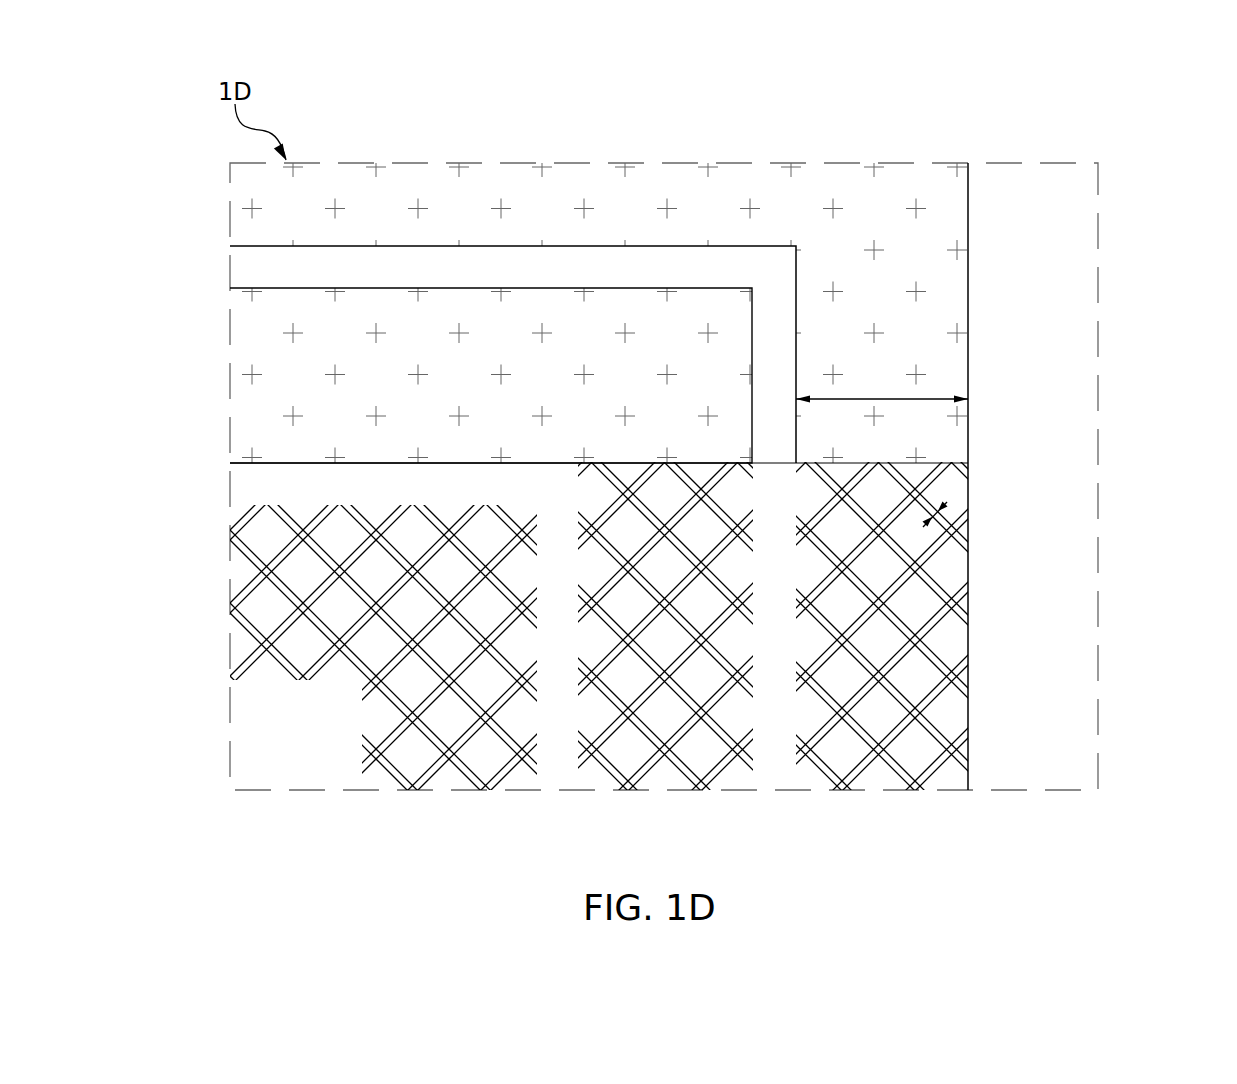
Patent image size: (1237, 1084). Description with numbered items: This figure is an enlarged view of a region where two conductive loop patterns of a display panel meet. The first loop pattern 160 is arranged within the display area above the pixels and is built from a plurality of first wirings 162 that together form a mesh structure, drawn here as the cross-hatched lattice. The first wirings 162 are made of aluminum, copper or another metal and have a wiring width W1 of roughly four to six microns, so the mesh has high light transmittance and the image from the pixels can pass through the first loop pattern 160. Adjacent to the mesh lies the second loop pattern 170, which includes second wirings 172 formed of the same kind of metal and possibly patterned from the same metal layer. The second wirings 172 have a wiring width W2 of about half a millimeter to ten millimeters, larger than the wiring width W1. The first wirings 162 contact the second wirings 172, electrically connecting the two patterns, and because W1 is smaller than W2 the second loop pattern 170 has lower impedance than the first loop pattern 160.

The second wirings 172 is at (940, 285).
The second loop pattern 170 is at (968, 348).
The wiring width of the second wirings W2 is at (928, 398).
The wiring width of the first wirings W1 is at (960, 493).
The first loop pattern 160 is at (938, 560).
The first wirings 162 is at (933, 628).